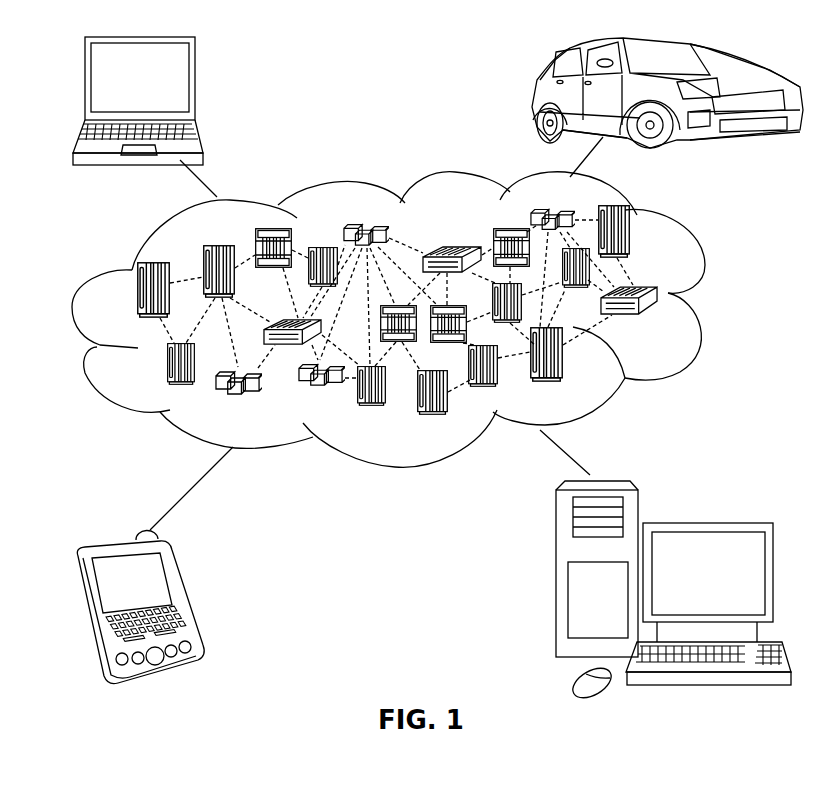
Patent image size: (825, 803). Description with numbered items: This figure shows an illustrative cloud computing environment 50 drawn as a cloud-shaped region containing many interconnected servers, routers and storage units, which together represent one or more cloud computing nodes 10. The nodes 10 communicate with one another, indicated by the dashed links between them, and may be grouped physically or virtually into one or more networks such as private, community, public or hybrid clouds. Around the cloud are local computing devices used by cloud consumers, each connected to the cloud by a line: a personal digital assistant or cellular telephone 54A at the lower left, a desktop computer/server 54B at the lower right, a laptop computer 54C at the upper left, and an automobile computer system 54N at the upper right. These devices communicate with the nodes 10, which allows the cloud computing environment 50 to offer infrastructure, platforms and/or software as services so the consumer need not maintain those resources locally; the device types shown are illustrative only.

The cloud computing nodes 10 is at (658, 320).
The cloud computing environment 50 is at (703, 297).
The personal digital assistant or cellular telephone 54A is at (183, 596).
The desktop computer/server 54B is at (706, 522).
The laptop computer 54C is at (195, 83).
The automobile computer system 54N is at (535, 97).